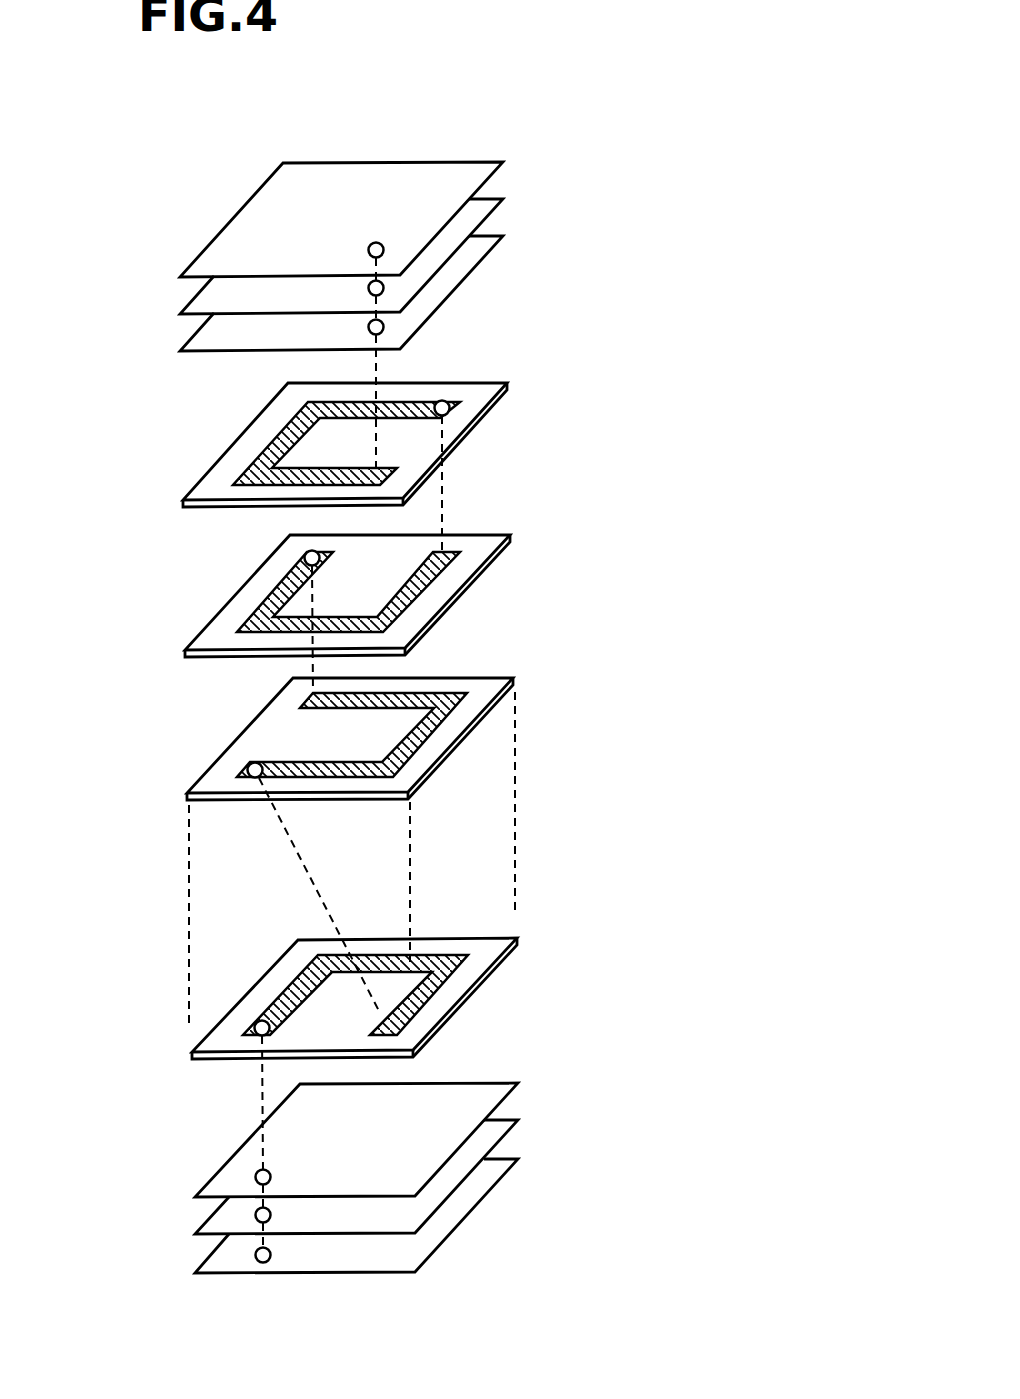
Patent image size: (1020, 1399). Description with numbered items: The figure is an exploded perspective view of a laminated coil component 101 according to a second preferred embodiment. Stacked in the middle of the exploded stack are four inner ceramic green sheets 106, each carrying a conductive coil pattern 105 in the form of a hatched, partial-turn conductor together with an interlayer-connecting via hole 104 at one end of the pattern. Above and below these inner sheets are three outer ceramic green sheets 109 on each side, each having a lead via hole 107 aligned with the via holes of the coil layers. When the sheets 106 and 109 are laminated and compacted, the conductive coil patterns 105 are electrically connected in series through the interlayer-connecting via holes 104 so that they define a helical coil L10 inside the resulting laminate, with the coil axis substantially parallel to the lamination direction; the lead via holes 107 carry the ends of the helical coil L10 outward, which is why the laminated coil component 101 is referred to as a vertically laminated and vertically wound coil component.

The laminated coil component 101 is at (195, 193).
The interlayer-connecting via hole 104 is at (452, 406).
The conductive coil pattern 105 is at (400, 402).
The inner ceramic green sheet 106 is at (460, 443).
The lead via hole 107 is at (384, 250).
The outer ceramic green sheet 109 is at (196, 257).
The helical coil L10 is at (246, 608).